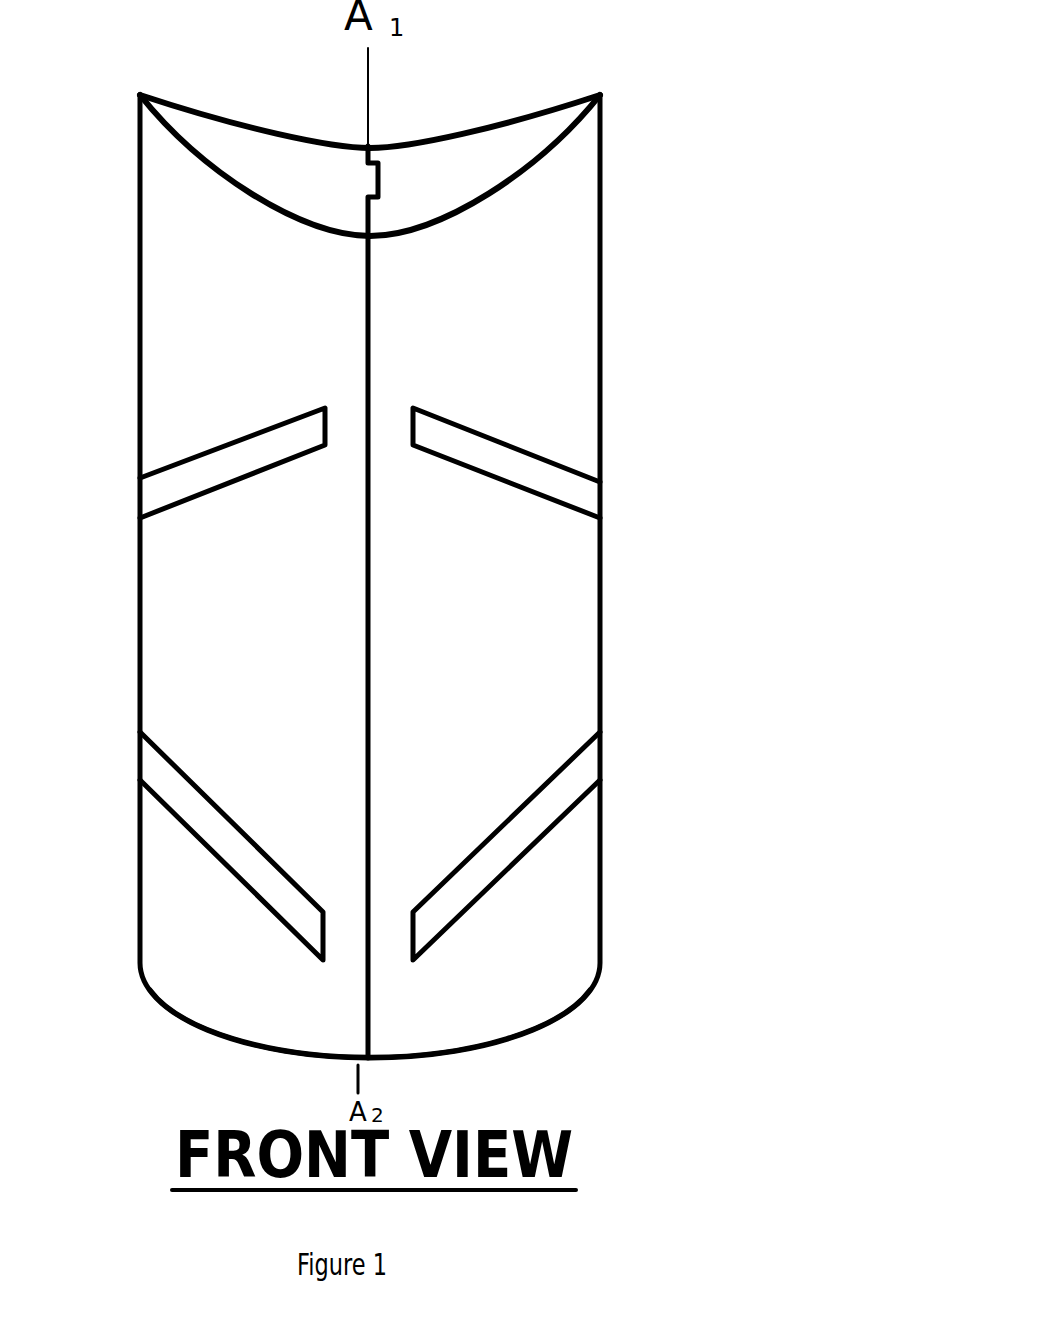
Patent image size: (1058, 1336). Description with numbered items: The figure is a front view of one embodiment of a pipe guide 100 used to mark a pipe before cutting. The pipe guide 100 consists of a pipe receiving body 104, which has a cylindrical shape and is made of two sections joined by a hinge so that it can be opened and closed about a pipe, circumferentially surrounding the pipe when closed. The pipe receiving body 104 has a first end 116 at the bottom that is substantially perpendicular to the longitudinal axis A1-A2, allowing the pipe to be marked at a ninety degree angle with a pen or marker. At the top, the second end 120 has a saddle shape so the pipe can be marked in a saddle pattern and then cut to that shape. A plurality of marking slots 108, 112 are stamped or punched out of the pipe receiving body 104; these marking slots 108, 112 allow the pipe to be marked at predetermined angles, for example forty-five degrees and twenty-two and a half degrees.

The pipe guide 100 is at (474, 538).
The pipe receiving body 104 is at (603, 327).
The marking slots 108 is at (455, 428).
The marking slots 112 is at (215, 448).
The first end 116 is at (540, 1027).
The second end 120 is at (492, 117).